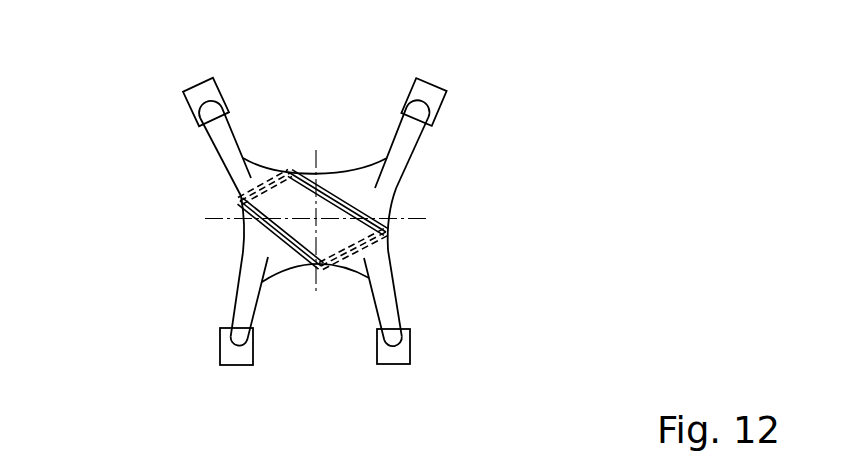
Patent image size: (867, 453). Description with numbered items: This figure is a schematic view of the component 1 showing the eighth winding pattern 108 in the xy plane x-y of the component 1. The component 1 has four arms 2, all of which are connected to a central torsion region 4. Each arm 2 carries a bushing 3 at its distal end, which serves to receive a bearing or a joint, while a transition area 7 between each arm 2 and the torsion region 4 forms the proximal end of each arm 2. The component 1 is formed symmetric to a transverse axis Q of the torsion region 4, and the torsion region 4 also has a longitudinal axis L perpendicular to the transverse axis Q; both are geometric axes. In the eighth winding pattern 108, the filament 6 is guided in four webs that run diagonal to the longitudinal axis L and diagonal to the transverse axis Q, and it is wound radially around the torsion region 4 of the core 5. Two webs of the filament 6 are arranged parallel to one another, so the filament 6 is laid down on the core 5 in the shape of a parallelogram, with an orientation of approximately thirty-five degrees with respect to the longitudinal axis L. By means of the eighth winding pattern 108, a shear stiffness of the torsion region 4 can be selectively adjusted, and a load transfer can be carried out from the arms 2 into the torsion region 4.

The component 1 is at (149, 102).
The arm 2 is at (236, 140).
The bushing 3 is at (205, 93).
The torsion region 4 is at (360, 265).
The core 5 is at (365, 262).
The filament 6 is at (358, 195).
The transition area 7 is at (222, 188).
The eighth winding pattern 108 is at (401, 233).
The longitudinal axis L is at (205, 218).
The transverse axis Q is at (318, 268).
The xy plane x-y is at (316, 197).